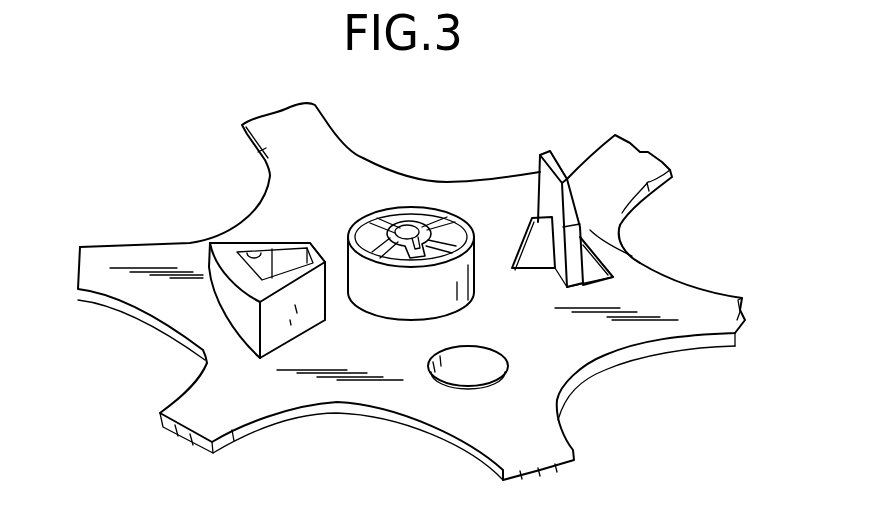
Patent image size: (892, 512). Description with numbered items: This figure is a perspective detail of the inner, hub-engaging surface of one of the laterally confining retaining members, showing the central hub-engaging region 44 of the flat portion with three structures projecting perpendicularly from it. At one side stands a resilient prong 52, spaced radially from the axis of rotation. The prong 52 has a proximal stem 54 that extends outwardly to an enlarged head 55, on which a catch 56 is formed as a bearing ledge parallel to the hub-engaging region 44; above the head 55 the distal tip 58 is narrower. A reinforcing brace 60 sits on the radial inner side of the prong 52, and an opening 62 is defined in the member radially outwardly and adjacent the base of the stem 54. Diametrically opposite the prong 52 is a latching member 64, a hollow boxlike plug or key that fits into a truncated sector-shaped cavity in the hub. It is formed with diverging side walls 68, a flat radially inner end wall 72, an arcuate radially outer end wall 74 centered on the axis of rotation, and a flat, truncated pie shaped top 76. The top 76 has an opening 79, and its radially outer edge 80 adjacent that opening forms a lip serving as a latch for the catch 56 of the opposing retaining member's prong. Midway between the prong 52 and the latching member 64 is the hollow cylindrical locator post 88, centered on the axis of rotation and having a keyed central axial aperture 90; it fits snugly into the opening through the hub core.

The hub-engaging region 44 is at (363, 390).
The resilient prong 52 is at (542, 191).
The proximal stem 54 is at (554, 265).
The enlarged head 55 is at (582, 207).
The catch 56 is at (618, 228).
The distal tip 58 is at (577, 176).
The reinforcing brace 60 is at (532, 257).
The opening 62 is at (585, 262).
The latching member 64 is at (277, 234).
The side wall 68 is at (300, 317).
The radial inner end wall 72 is at (323, 255).
The radial outer end wall 74 is at (227, 303).
The top 76 is at (263, 244).
The opening 79 is at (265, 243).
The radially outer edge 80 is at (248, 270).
The locator post 88 is at (440, 207).
The keyed central axial aperture 90 is at (404, 228).